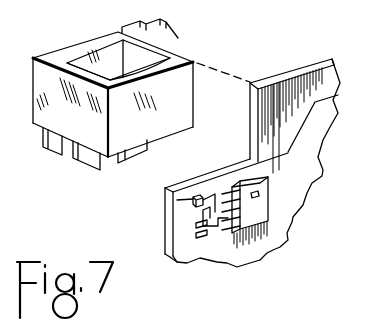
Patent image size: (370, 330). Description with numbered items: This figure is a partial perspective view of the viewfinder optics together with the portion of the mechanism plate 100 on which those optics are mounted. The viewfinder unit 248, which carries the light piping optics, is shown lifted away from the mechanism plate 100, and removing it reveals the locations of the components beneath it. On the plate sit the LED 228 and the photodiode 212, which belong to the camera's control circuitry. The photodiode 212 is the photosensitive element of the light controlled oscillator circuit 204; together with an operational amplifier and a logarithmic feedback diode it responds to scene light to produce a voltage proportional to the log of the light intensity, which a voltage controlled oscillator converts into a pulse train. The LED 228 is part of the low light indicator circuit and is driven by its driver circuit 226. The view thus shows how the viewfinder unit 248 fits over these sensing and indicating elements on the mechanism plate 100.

The viewfinder unit 248 is at (58, 54).
The mechanism plate 100 is at (285, 78).
The light controlled oscillator 204 is at (270, 207).
The photodiode 212 is at (254, 192).
The driver circuit 226 is at (178, 239).
The LED 228 is at (191, 202).